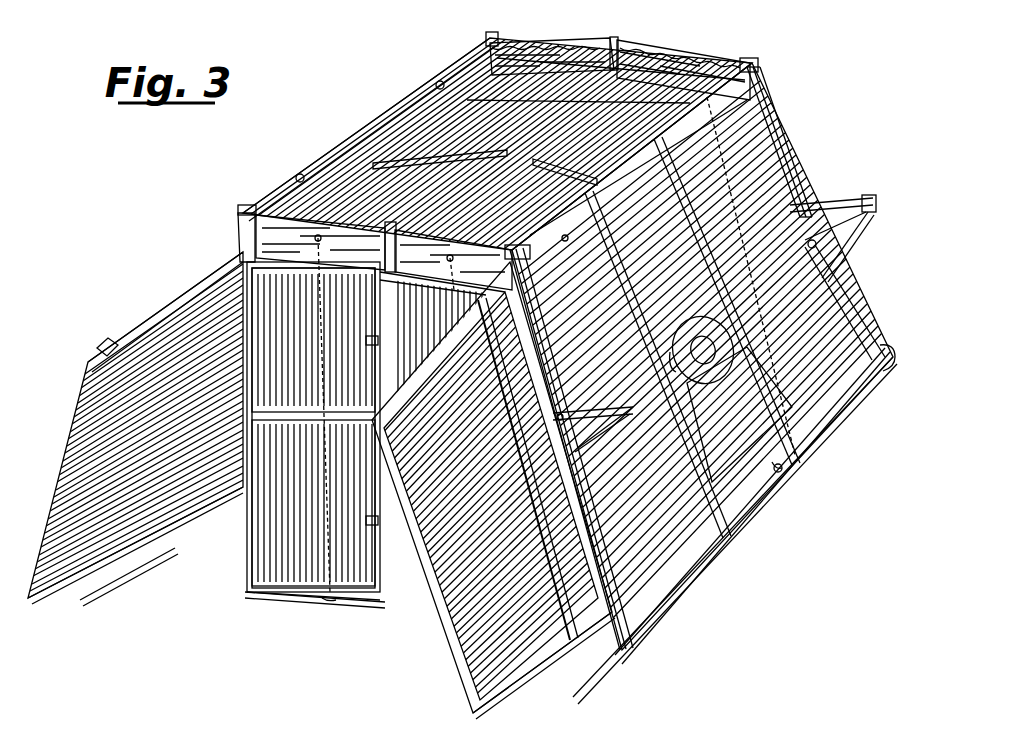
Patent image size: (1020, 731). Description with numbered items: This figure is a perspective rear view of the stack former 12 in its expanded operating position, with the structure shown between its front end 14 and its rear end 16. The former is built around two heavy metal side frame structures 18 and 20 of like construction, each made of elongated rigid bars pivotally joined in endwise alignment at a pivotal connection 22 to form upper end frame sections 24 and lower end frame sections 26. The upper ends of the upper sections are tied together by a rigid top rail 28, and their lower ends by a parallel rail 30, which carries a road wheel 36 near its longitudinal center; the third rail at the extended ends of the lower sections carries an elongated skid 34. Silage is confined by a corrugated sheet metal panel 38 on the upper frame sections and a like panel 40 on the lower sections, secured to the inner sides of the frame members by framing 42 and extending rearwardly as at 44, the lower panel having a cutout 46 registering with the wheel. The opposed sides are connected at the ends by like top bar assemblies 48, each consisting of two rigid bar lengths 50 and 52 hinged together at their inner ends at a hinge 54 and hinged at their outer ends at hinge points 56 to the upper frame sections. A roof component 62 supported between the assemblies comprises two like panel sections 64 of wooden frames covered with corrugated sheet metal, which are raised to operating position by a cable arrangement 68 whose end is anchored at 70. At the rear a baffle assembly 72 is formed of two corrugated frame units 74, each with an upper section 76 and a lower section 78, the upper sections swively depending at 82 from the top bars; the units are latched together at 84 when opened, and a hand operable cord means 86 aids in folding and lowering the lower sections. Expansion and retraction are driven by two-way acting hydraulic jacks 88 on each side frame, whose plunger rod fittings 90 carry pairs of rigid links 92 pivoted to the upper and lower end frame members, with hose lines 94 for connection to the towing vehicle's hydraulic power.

The stack former 12 is at (362, 115).
The front end 14 is at (782, 90).
The rear end 16 is at (337, 648).
The side frame structure 18 is at (795, 153).
The side frame structure 20 is at (225, 243).
The pivotal connection 22 is at (840, 253).
The upper end frame section 24 is at (777, 123).
The lower end frame section 26 is at (640, 600).
The top rail 28 is at (400, 105).
The rigid rail 30 is at (810, 195).
The skid 34 is at (130, 556).
The road wheel 36 is at (703, 371).
The corrugated sheet metal panel 38 is at (170, 318).
The corrugated sheet metal panel 40 is at (165, 528).
The framing 42 is at (700, 178).
The rearward extension 44 is at (70, 442).
The cutout 46 is at (739, 414).
The top bar assembly 48 is at (265, 215).
The rigid bar length 50 is at (586, 30).
The rigid bar length 52 is at (674, 48).
The hinge 54 is at (395, 222).
The hinge point 56 is at (490, 38).
The roof component 62 is at (352, 165).
The panel section 64 is at (518, 80).
The cable arrangement 68 is at (436, 85).
The cable anchor 70 is at (777, 498).
The baffle assembly 72 is at (278, 584).
The corrugated frame unit 74 is at (246, 562).
The upper section 76 is at (367, 340).
The lower section 78 is at (376, 614).
The swivel suspension 82 is at (315, 236).
The latch 84 is at (370, 345).
The cable or cord means 86 is at (330, 602).
The hydraulic jack 88 is at (97, 340).
The fitting 90 is at (113, 335).
The link 92 is at (862, 228).
The hose line 94 is at (701, 295).